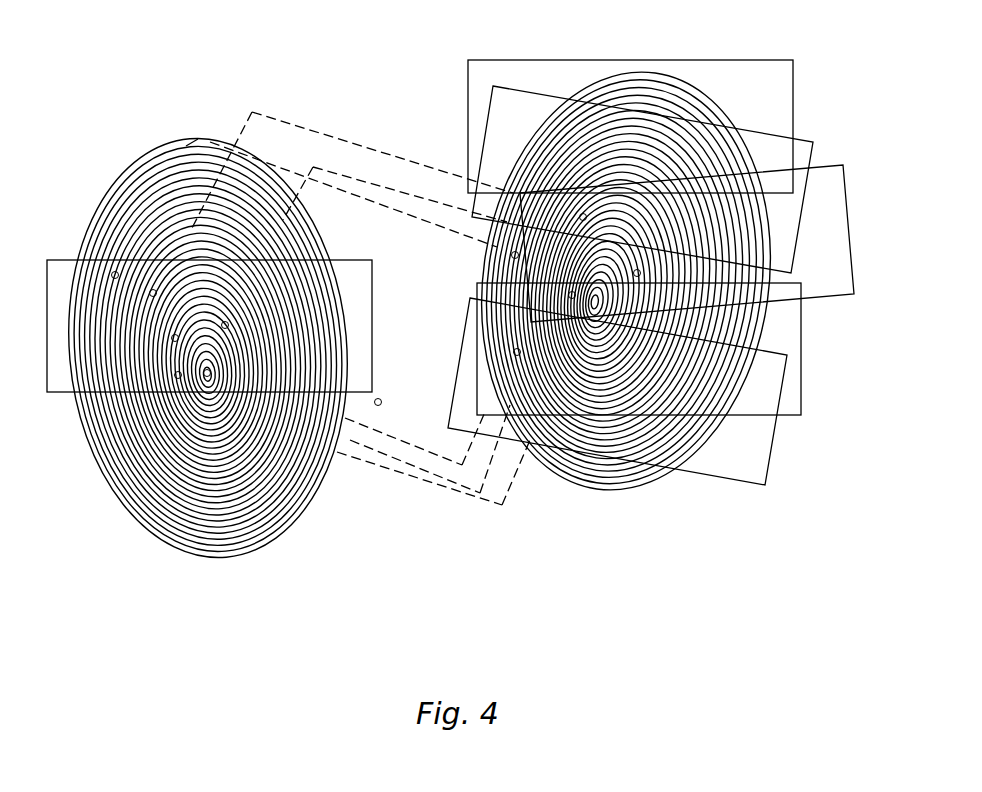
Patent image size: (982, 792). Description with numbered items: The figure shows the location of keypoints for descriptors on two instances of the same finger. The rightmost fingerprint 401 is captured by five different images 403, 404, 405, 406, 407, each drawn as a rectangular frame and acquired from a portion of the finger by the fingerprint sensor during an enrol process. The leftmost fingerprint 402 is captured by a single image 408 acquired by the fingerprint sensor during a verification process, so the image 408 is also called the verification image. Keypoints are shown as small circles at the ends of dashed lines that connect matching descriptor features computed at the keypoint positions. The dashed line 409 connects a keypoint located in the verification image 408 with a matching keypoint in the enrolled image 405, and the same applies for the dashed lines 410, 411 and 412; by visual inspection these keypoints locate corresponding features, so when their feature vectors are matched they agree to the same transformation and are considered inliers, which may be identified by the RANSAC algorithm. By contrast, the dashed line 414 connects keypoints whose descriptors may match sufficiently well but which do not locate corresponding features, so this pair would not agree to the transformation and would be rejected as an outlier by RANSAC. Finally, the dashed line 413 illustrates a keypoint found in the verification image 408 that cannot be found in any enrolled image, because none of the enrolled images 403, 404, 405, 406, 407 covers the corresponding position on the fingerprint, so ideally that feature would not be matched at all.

The rightmost fingerprint 401 is at (643, 503).
The leftmost fingerprint 402 is at (187, 550).
The enrolled image 403 is at (732, 59).
The enrolled image 404 is at (805, 136).
The enrolled image 405 is at (836, 305).
The enrolled image 406 is at (806, 400).
The enrolled image 407 is at (768, 466).
The verification image 408 is at (63, 393).
The dashed line 409 is at (275, 108).
The dashed line 410 is at (347, 172).
The dashed line 411 is at (515, 477).
The dashed line 412 is at (380, 450).
The dashed line 413 is at (197, 142).
The dashed line 414 is at (378, 398).